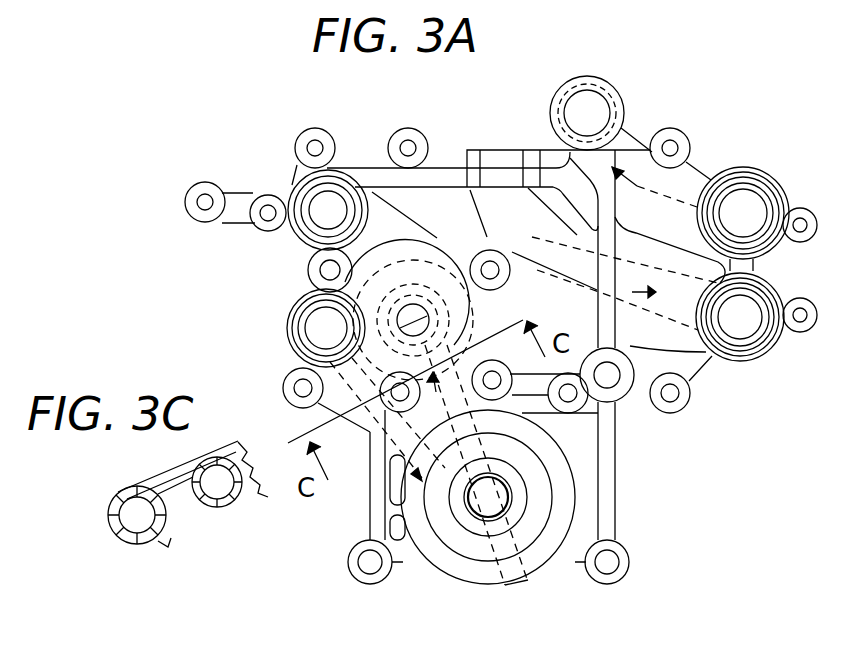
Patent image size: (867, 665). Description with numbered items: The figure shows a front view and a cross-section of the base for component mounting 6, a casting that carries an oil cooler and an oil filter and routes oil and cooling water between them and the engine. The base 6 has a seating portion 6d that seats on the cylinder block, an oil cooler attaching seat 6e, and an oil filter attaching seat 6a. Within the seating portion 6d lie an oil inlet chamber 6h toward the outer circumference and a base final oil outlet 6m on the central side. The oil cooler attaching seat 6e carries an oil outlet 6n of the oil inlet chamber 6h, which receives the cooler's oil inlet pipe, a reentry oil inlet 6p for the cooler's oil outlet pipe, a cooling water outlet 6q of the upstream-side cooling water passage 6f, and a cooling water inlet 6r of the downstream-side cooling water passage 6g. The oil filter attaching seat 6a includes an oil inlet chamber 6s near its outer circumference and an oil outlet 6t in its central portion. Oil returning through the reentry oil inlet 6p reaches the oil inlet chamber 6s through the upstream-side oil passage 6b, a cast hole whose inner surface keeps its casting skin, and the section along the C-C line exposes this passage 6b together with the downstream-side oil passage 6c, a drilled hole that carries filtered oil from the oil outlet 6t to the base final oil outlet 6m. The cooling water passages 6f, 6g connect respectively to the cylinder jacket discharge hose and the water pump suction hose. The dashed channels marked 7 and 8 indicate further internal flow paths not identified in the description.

In FIG. 3A, the base for component mounting 6 is at (368, 508).
In FIG. 3A, the oil filter attaching seat 6a is at (468, 582).
In FIG. 3A, the upstream-side oil passage 6b is at (345, 405).
In FIG. 3C, the upstream-side oil passage 6b is at (127, 537).
In FIG. 3A, the downstream-side oil passage 6c is at (488, 450).
In FIG. 3C, the downstream-side oil passage 6c is at (220, 507).
In FIG. 3A, the seating portion 6d is at (478, 268).
In FIG. 3A, the oil cooler attaching seat 6e is at (450, 188).
In FIG. 3A, the upstream-side cooling water passage 6f is at (667, 340).
In FIG. 3A, the downstream-side cooling water passage 6g is at (693, 172).
In FIG. 3A, the oil inlet chamber 6h is at (503, 312).
In FIG. 3A, the base final oil outlet 6m is at (413, 302).
In FIG. 3A, the oil outlet 6n is at (328, 228).
In FIG. 3A, the reentry oil inlet 6p is at (303, 327).
In FIG. 3A, the cooling water outlet 6q is at (758, 312).
In FIG. 3A, the cooling water inlet 6r is at (746, 192).
In FIG. 3A, the oil inlet chamber 6s is at (452, 537).
In FIG. 3A, the oil outlet 6t is at (520, 555).
In FIG. 3A, the oil passage 7 is at (365, 452).
In FIG. 3A, the oil passage 8 is at (657, 198).